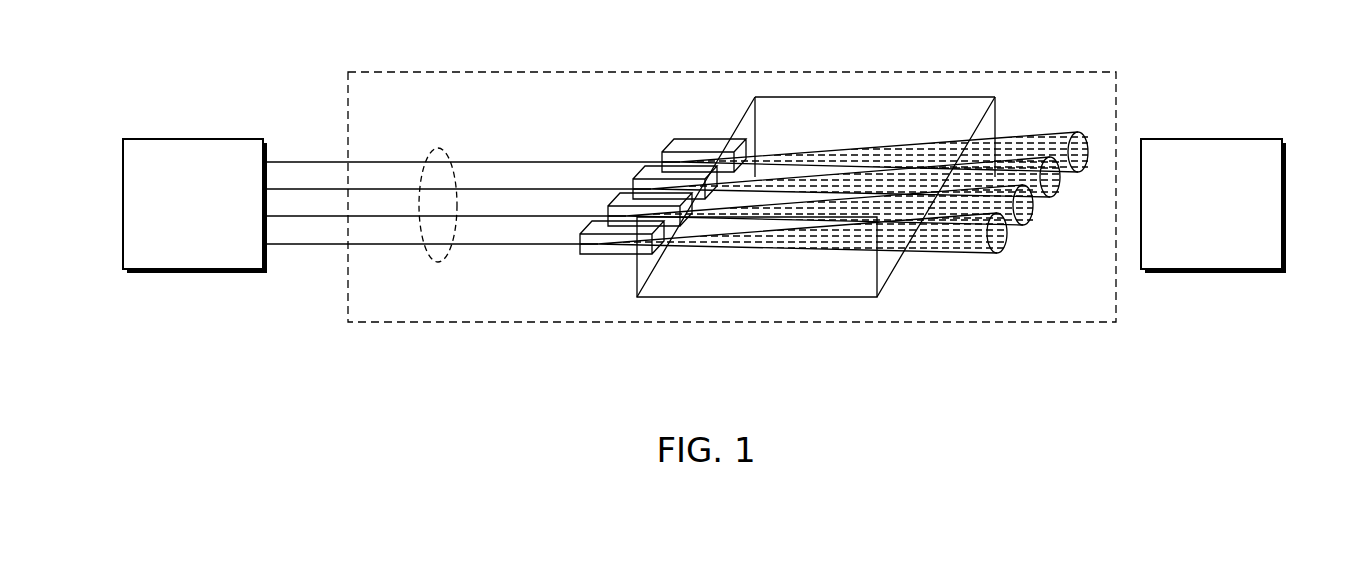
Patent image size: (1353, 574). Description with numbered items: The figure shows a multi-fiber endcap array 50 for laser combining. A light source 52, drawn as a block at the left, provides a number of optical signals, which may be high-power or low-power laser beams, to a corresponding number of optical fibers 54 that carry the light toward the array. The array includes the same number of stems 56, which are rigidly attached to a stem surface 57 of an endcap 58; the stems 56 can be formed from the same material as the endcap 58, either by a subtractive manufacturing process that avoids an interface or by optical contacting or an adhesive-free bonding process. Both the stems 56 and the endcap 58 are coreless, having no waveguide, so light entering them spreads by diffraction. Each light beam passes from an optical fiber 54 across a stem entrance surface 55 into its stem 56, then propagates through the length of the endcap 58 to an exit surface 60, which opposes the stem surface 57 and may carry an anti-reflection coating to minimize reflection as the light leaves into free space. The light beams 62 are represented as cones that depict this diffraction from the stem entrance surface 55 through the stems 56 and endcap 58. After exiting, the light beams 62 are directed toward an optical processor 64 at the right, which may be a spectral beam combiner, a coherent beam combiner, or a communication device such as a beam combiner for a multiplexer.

The multi-fiber endcap array 50 is at (346, 101).
The light source 52 is at (122, 201).
The optical fibers 54 is at (430, 152).
The stem entrance surface 55 is at (606, 200).
The stems 56 is at (632, 202).
The stem surface 57 is at (700, 278).
The endcap 58 is at (742, 127).
The exit surface 60 is at (987, 118).
The light beams 62 is at (1080, 131).
The optical processor 64 is at (1286, 205).